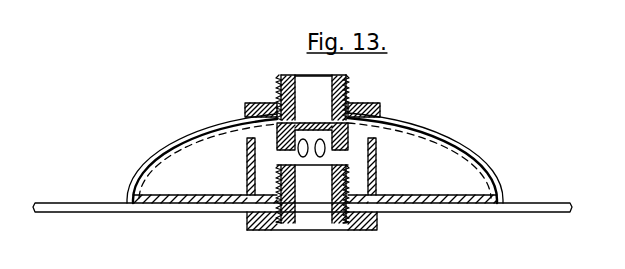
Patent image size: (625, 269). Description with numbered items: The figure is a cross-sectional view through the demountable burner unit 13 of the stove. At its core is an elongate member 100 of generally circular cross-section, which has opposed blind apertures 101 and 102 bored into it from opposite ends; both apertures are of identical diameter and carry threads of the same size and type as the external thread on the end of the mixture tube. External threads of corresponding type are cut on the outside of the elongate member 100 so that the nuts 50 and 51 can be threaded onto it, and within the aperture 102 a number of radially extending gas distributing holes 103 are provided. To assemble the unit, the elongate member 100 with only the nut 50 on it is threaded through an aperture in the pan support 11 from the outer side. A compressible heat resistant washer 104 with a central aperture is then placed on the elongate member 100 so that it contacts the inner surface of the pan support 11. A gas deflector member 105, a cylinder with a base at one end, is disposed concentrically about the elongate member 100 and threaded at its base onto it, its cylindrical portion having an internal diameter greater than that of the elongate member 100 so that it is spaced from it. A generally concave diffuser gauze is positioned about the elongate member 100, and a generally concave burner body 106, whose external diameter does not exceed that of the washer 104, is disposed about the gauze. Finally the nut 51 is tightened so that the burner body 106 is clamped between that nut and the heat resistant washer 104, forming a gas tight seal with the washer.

The elongate member 100 is at (348, 75).
The blind aperture 101 is at (303, 92).
The blind aperture 102 is at (313, 218).
The gas distributing holes 103 is at (285, 163).
The compressible heat resistant washer 104 is at (176, 200).
The gas deflector member 105 is at (377, 173).
The burner body 106 is at (503, 183).
The pan support 11 is at (237, 207).
The burner unit 13 is at (245, 108).
The nut 50 is at (375, 230).
The nut 51 is at (383, 112).